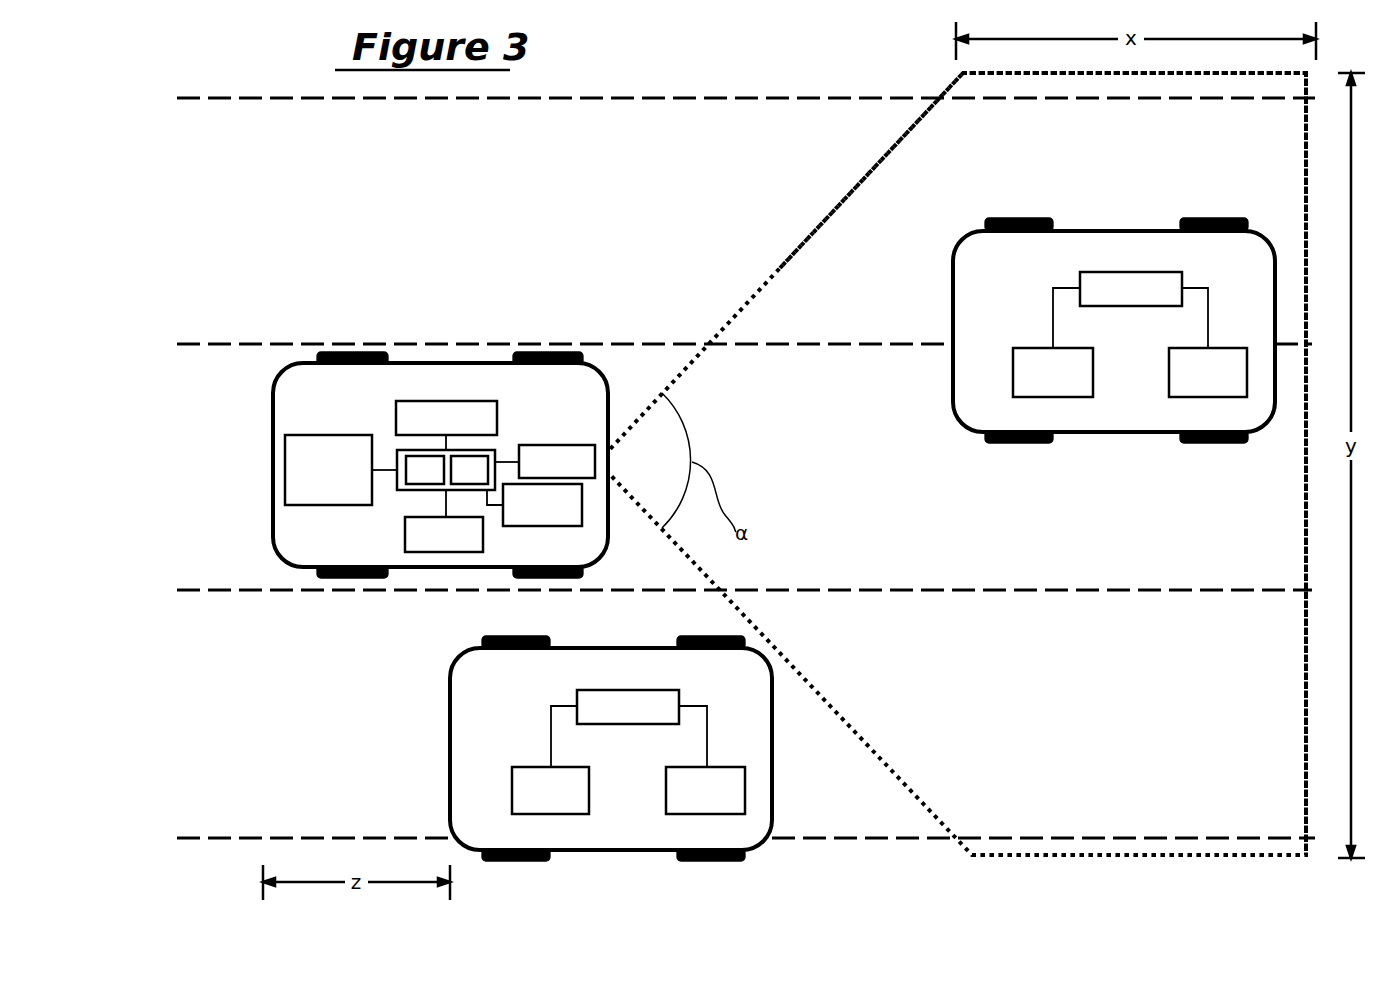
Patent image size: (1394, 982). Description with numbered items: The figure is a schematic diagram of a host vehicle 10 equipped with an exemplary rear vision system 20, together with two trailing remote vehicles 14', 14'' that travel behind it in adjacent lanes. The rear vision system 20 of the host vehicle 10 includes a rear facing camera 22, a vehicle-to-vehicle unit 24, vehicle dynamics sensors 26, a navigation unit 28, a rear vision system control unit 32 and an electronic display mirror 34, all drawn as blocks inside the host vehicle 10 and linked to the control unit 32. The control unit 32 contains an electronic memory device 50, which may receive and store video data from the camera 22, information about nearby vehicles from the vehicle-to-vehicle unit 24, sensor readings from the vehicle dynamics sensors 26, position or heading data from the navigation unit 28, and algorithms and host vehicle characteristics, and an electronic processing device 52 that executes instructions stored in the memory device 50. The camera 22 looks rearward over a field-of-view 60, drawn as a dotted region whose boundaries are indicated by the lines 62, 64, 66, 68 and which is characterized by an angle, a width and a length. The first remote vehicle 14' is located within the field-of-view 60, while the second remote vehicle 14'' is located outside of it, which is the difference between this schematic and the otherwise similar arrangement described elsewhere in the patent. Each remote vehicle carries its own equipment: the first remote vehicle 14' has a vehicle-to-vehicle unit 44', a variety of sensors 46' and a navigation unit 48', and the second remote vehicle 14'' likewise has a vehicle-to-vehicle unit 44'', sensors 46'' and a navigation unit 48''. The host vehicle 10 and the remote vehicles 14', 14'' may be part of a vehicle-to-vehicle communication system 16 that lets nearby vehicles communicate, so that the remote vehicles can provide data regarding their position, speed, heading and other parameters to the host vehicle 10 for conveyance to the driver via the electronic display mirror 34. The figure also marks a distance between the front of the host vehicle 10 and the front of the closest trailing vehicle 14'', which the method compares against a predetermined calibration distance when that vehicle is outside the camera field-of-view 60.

The host vehicle 10 is at (302, 365).
The remote vehicle 14' is at (1114, 307).
The remote vehicle 14'' is at (574, 748).
The vehicle-to-vehicle communication system 16 is at (927, 215).
The rear vision system 20 is at (580, 390).
The camera 22 is at (545, 461).
The vehicle-to-vehicle unit 24 is at (446, 425).
The vehicle dynamics sensors 26 is at (534, 505).
The navigation unit 28 is at (444, 521).
The rear vision system control unit 32 is at (423, 492).
The electronic display mirror 34 is at (341, 470).
The electronic memory device 50 is at (425, 470).
The electronic processing device 52 is at (469, 470).
The vehicle-to-vehicle unit 44' is at (1130, 310).
The sensors 46' is at (1208, 372).
The navigation unit 48' is at (1053, 372).
The vehicle-to-vehicle unit 44'' is at (629, 728).
The sensors 46'' is at (705, 790).
The navigation unit 48'' is at (550, 790).
The field-of-view 60 is at (770, 270).
The field of view upper boundary 62 is at (845, 197).
The field of view far boundary 64 is at (1311, 145).
The field of view top edge 66 is at (1087, 73).
The field of view bottom edge 68 is at (978, 858).